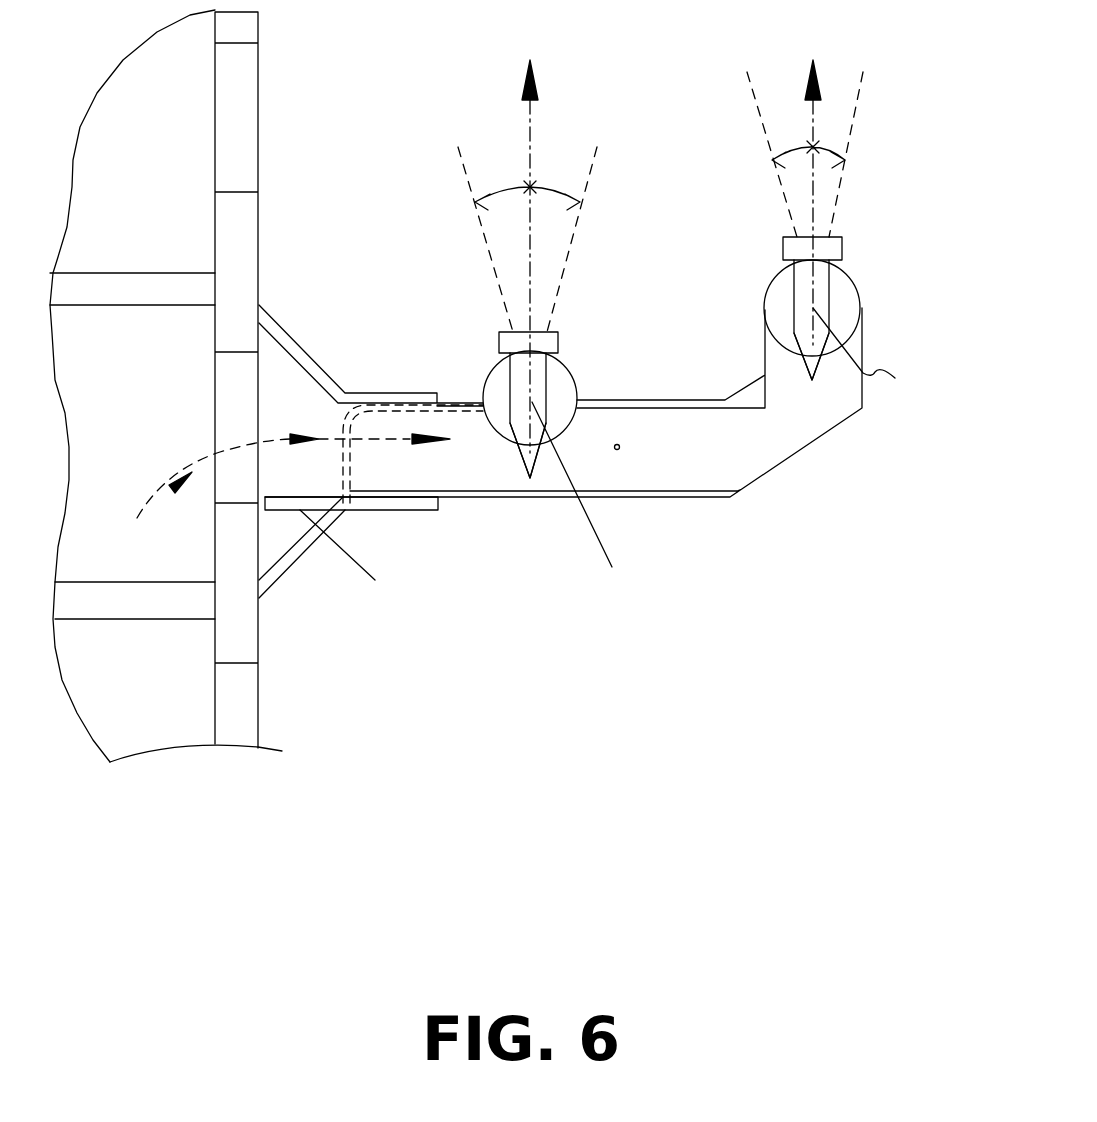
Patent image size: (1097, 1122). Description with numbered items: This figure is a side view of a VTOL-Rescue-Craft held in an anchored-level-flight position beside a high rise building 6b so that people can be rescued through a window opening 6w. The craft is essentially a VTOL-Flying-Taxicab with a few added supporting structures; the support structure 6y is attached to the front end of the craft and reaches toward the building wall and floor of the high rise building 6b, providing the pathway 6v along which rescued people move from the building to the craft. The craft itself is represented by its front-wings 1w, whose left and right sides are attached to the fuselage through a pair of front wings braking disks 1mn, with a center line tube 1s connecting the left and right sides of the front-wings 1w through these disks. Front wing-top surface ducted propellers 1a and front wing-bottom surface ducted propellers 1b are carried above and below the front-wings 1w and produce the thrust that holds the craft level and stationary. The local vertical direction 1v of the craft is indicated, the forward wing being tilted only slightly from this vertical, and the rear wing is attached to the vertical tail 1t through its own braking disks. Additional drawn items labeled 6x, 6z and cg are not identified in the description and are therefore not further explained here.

The window opening 6w is at (247, 97).
The high rise building 6b is at (143, 285).
The support structure 6y is at (288, 333).
The internal pipe 6x is at (355, 428).
The supply pipe 6z is at (450, 412).
The pathway for rescued people 6v is at (285, 475).
The local vertical direction 1v is at (530, 132).
The front wing-bottom surface ducted propellers 1b is at (497, 330).
The vertical tail 1t is at (560, 300).
The front wing-top surface ducted propellers 1a is at (558, 342).
The front wings braking disks 1mn is at (563, 383).
The center line tube 1s is at (731, 457).
The front-wings 1w is at (533, 478).
The center of gravity cg is at (617, 449).